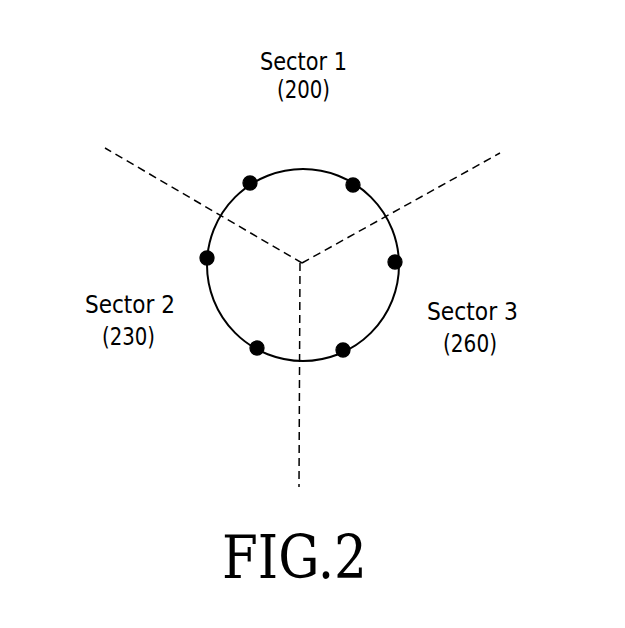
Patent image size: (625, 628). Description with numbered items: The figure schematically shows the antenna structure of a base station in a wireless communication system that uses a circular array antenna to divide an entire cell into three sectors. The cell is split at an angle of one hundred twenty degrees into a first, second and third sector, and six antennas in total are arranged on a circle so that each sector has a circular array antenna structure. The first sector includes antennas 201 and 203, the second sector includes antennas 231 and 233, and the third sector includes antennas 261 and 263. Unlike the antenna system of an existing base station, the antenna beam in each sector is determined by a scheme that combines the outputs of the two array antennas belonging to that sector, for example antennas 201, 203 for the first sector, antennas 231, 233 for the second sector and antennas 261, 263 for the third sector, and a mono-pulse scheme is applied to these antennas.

The antenna 201 is at (250, 176).
The antenna 203 is at (353, 178).
The antenna 231 is at (200, 258).
The antenna 233 is at (257, 355).
The antenna 261 is at (402, 262).
The antenna 263 is at (343, 357).